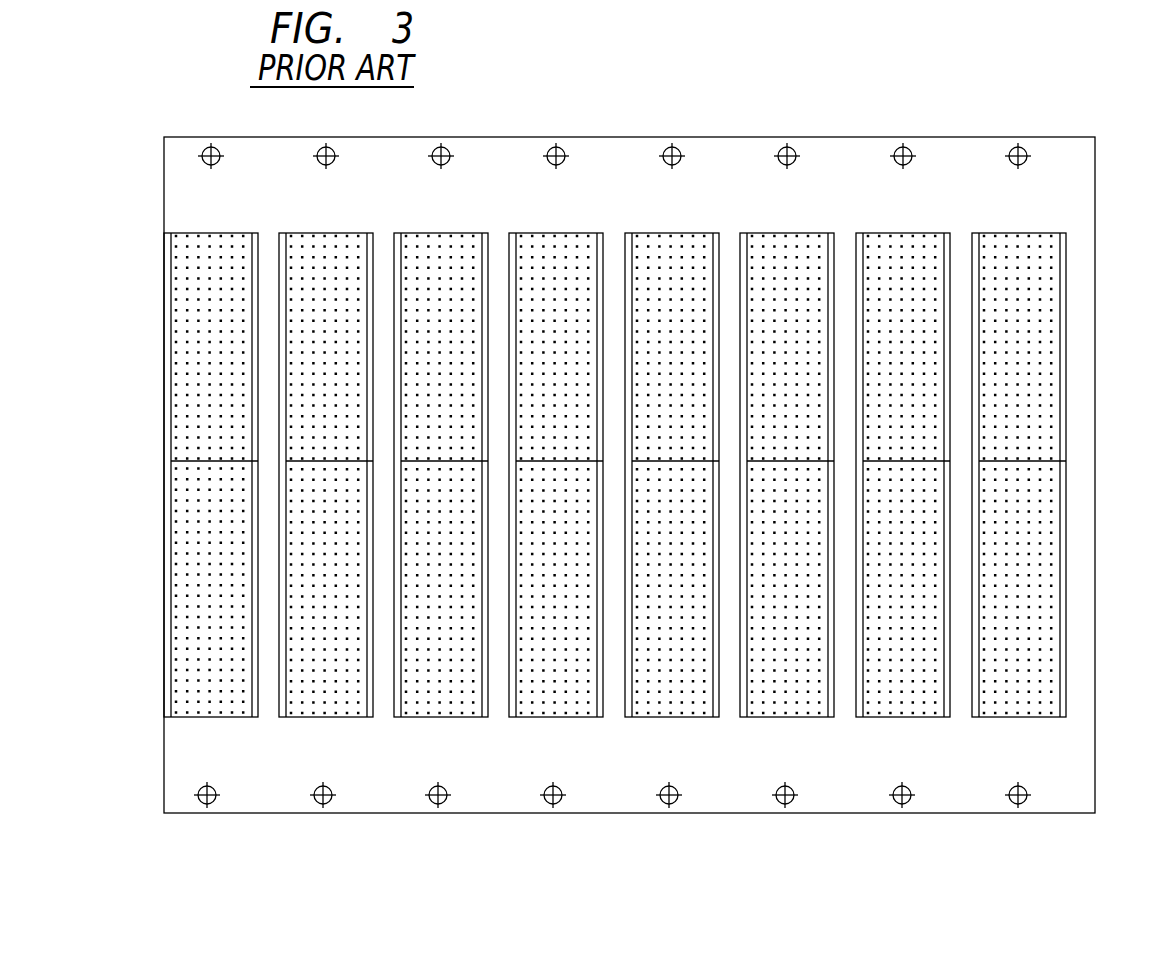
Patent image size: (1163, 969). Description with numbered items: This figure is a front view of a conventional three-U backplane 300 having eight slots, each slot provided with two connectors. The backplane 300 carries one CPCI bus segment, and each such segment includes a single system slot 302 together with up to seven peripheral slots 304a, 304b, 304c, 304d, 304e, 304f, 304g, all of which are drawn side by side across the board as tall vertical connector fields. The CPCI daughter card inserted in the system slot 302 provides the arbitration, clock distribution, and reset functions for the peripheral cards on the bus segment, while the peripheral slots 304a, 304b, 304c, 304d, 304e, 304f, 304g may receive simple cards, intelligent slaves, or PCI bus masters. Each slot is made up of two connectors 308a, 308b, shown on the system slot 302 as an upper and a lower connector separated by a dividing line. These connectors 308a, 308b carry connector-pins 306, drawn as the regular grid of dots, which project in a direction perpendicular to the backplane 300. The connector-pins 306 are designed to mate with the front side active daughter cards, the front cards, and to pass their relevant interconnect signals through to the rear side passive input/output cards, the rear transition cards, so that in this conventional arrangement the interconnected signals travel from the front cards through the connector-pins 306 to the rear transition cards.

The backplane 300 is at (1095, 176).
The system slot 302 is at (155, 444).
The peripheral slot 304a is at (315, 548).
The peripheral slot 304b is at (430, 548).
The peripheral slot 304c is at (546, 548).
The peripheral slot 304d is at (662, 548).
The peripheral slot 304e is at (777, 548).
The peripheral slot 304f is at (894, 548).
The peripheral slot 304g is at (1009, 548).
The connector-pins 306 is at (188, 510).
The connector 308a is at (170, 587).
The connector 308b is at (170, 360).